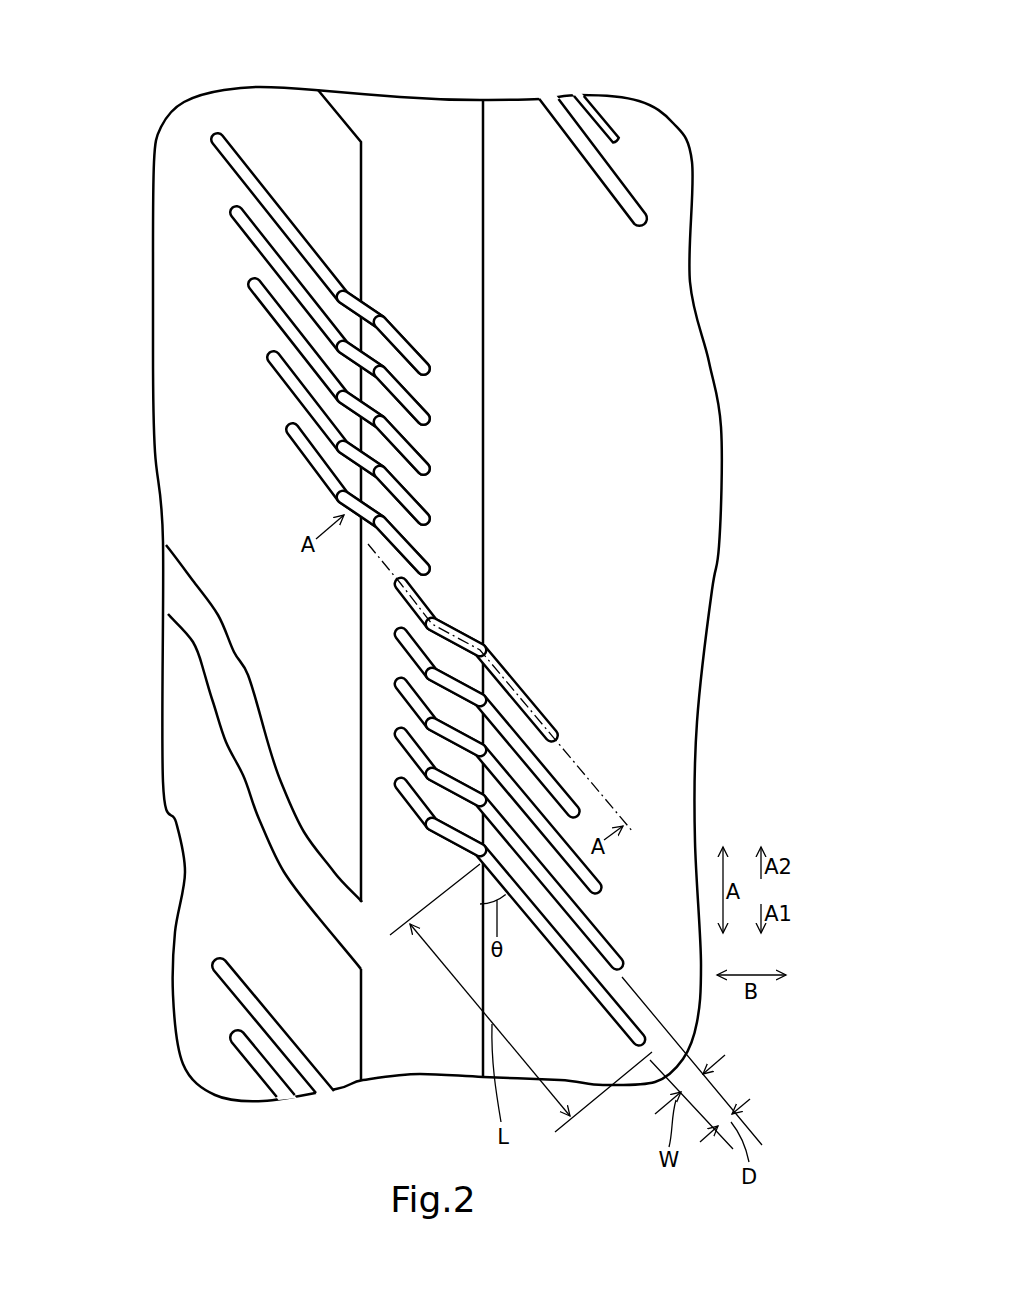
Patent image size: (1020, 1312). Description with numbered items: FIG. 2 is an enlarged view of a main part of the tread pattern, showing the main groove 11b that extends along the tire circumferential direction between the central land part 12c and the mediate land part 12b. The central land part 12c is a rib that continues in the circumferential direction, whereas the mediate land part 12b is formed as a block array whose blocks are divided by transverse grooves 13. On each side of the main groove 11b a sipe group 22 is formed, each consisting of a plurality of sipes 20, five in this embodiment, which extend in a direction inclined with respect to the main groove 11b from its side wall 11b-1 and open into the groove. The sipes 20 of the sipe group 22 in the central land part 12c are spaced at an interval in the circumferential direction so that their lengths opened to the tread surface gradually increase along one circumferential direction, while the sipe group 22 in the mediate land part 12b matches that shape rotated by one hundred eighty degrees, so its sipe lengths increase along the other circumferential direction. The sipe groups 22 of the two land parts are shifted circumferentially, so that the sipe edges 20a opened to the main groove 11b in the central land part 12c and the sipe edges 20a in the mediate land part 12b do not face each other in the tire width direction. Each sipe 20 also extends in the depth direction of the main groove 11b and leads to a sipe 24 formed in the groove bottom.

The main groove 11b is at (414, 549).
The side wall of the main groove 11b-1 is at (358, 195).
The mediate land part 12b is at (221, 822).
The central land part 12c is at (611, 512).
The transverse groove 13 is at (217, 665).
The sipe 20 is at (381, 589).
The sipe edge 20a is at (360, 407).
The sipe group 22 is at (381, 589).
The sipe 24 is at (413, 555).